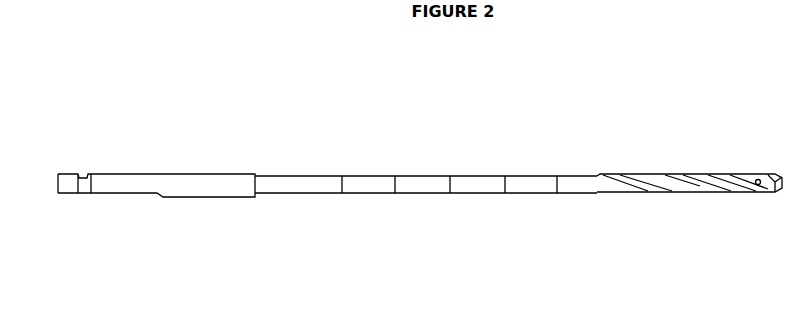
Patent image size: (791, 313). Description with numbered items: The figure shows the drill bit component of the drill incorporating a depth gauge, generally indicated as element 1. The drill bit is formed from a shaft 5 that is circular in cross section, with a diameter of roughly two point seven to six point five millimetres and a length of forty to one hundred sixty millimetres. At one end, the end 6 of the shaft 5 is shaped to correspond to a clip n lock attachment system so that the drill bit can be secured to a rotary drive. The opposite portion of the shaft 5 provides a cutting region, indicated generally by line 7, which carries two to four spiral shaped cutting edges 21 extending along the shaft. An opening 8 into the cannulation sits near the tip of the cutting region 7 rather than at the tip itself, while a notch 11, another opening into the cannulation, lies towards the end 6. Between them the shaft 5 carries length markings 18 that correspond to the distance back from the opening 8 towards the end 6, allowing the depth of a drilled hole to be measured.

The drill bit incorporating depth gauge 1 is at (399, 199).
The shaft 5 is at (432, 174).
The end of shaft 6 is at (63, 186).
The cutting region 7 is at (689, 182).
The opening 8 is at (760, 179).
The notch 11 is at (272, 189).
The length markings 18 is at (342, 193).
The spiral shaped cutting edges 21 is at (622, 178).